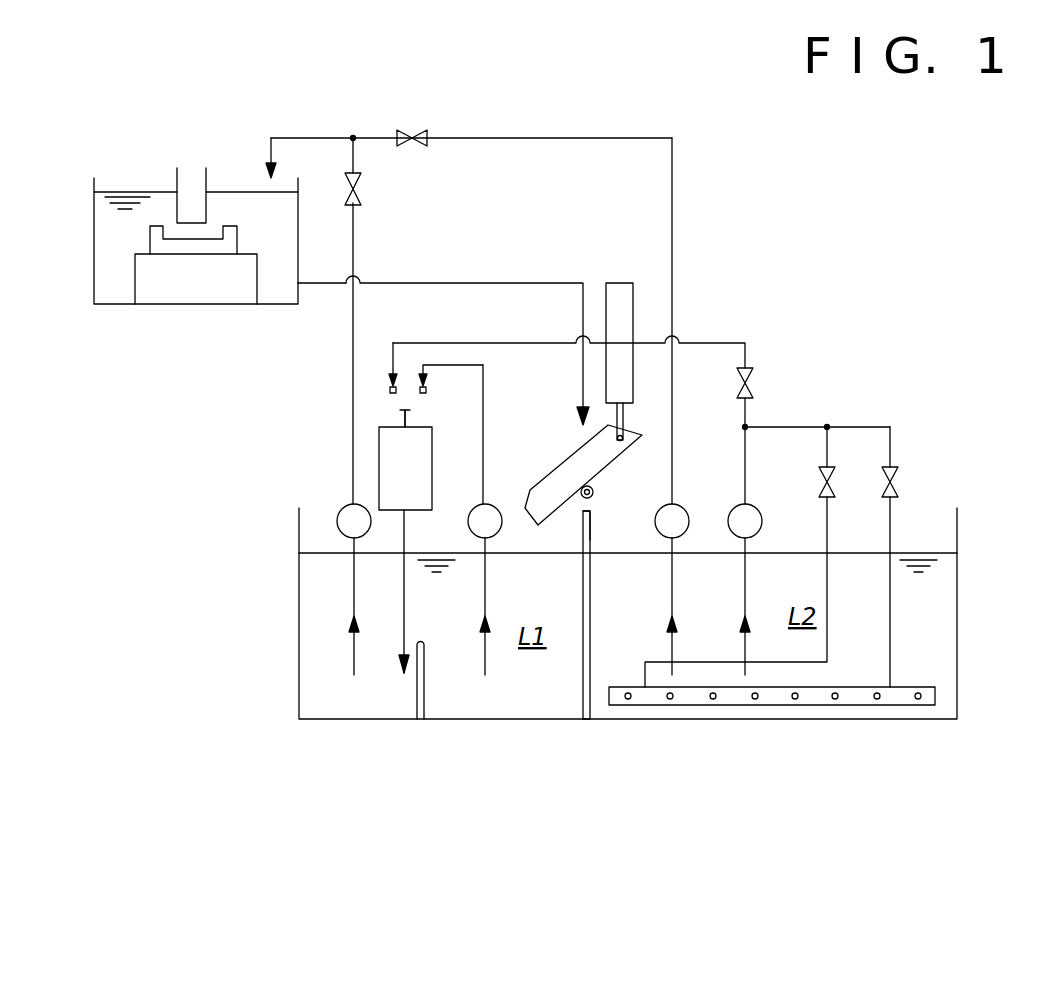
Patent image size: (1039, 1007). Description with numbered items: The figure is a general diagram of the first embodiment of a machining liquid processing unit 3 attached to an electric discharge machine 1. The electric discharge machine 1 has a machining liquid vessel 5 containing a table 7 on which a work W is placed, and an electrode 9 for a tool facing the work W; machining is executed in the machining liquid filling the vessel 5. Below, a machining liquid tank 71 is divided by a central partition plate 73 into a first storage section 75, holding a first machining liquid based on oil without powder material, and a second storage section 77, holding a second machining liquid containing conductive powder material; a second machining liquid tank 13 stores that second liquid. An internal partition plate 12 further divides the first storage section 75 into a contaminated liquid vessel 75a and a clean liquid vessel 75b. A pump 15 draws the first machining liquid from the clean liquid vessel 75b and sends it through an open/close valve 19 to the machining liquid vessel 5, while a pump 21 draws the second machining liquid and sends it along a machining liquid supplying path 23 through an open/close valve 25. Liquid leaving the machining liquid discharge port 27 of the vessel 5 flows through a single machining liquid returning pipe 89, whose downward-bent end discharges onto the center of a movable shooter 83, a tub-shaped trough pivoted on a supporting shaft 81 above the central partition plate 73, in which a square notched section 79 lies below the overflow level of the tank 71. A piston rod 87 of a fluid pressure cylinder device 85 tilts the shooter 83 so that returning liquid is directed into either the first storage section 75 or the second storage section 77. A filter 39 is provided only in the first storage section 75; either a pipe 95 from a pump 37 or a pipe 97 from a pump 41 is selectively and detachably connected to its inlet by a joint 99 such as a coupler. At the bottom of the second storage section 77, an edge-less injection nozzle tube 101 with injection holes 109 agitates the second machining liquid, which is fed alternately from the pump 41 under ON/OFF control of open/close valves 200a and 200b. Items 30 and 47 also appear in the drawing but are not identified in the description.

The electric discharge machine 1 is at (97, 170).
The machining liquid processing unit 3 is at (337, 402).
The machining liquid vessel 5 is at (298, 243).
The table for machining 7 is at (190, 290).
The electrode for a tool 9 is at (172, 176).
The work W is at (233, 238).
The internal partition plate 12 is at (426, 687).
The second machining liquid tank 13 is at (735, 720).
The pump 15 is at (353, 250).
The open/close valve 19 is at (361, 190).
The pump 21 is at (690, 512).
The machining liquid supplying path 23 is at (605, 138).
The open/close valve 25 is at (418, 134).
The machining liquid discharge port 27 is at (298, 288).
The pipe 30 is at (405, 410).
The pump 37 is at (495, 505).
The filter 39 is at (432, 450).
The pump 41 is at (762, 512).
The valve 47 is at (753, 385).
The machining liquid tank 71 is at (957, 675).
The central partition plate 73 is at (592, 645).
The first storage section 75 is at (298, 602).
The contaminated liquid vessel 75a is at (512, 708).
The clean liquid vessel 75b is at (367, 708).
The second storage section 77 is at (937, 598).
The notched section 79 is at (592, 520).
The supporting shaft 81 is at (594, 491).
The movable shooter 83 is at (573, 468).
The fluid pressure cylinder device 85 is at (620, 292).
The piston rod 87 is at (626, 413).
The machining liquid returning pipe 89 is at (525, 283).
The pipe 95 is at (487, 410).
The pipe 97 is at (522, 343).
The joint 99 is at (388, 390).
The edge-less injection nozzle tube 101 is at (697, 697).
The injection holes 109 is at (798, 699).
The open/close valve 200a is at (830, 468).
The open/close valve 200b is at (897, 478).